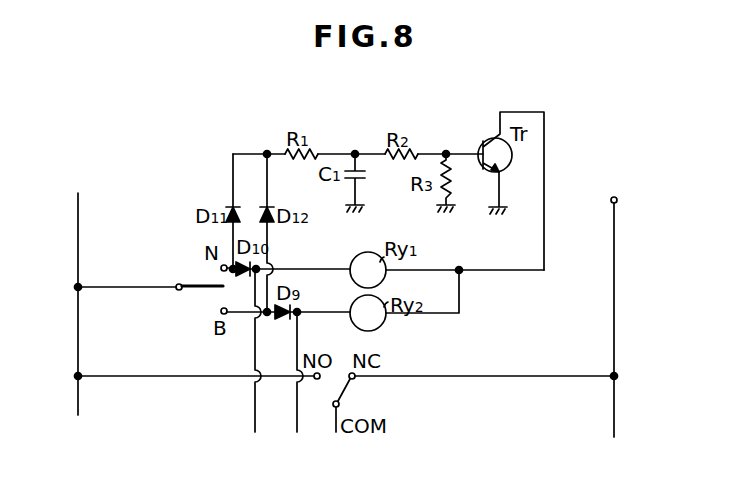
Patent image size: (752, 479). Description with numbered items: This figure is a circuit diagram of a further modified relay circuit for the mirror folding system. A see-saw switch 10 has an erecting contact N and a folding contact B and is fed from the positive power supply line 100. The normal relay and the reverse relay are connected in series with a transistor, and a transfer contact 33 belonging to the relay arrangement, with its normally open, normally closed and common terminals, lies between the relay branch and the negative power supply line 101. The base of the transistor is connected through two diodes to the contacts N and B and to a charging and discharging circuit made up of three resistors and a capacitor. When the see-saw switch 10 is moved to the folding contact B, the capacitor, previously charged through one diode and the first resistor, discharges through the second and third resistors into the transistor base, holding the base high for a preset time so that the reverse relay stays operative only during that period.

The positive power supply line 100 is at (78, 343).
The see-saw switch 10 is at (205, 290).
The transfer contact 33 is at (346, 390).
The negative power supply line 101 is at (615, 337).